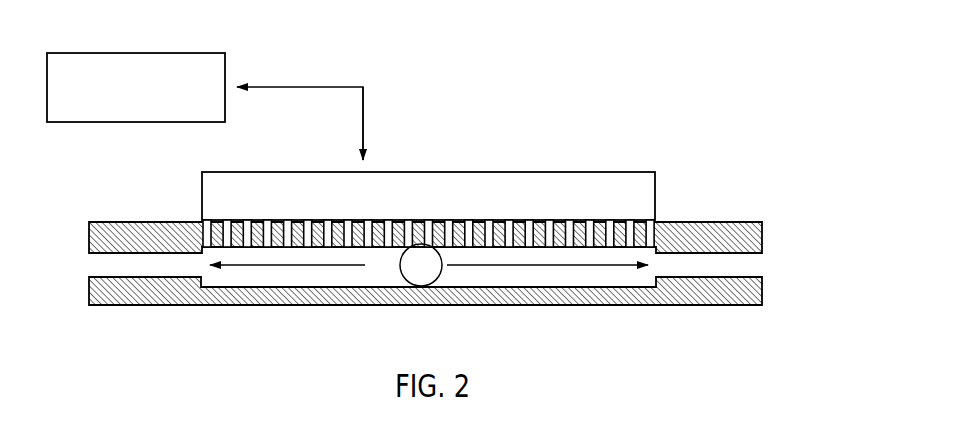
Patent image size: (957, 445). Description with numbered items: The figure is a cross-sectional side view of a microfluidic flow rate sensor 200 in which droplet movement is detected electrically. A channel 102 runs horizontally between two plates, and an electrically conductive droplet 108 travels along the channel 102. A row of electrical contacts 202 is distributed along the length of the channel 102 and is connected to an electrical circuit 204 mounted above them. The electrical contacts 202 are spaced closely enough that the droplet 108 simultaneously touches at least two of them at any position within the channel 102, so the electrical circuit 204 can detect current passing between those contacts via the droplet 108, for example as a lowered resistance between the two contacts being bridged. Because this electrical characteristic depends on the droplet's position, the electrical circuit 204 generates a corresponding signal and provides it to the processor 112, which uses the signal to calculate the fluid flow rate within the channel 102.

The microfluidic flow rate sensor 200 is at (660, 103).
The processor 112 is at (136, 87).
The electrical circuit 204 is at (428, 196).
The electrical contacts 202 is at (672, 237).
The channel 102 is at (644, 288).
The droplet 108 is at (421, 263).